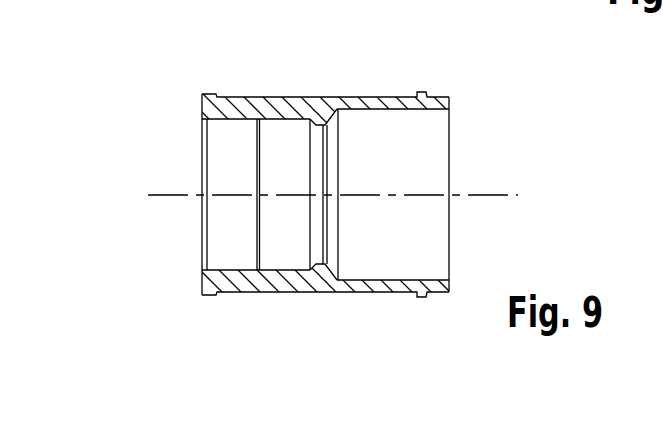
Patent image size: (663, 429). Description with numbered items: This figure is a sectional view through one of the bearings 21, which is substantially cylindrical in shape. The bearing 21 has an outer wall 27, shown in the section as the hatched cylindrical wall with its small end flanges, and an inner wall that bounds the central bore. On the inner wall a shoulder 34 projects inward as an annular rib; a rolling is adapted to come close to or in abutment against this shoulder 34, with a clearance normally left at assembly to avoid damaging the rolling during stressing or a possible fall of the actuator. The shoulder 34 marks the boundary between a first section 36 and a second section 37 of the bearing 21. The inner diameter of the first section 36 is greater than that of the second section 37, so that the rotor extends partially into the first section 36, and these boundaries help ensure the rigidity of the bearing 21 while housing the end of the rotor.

The bearing 21 is at (160, 74).
The outer wall 27 is at (353, 97).
The shoulder 34 is at (310, 266).
The first section 36 is at (433, 43).
The second section 37 is at (317, 43).